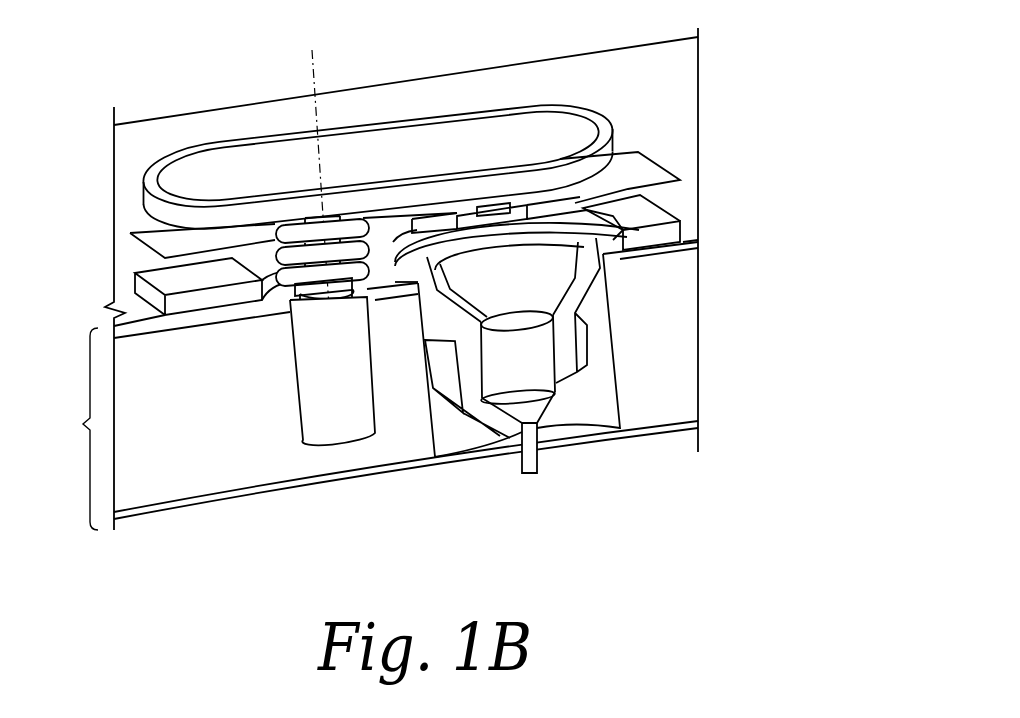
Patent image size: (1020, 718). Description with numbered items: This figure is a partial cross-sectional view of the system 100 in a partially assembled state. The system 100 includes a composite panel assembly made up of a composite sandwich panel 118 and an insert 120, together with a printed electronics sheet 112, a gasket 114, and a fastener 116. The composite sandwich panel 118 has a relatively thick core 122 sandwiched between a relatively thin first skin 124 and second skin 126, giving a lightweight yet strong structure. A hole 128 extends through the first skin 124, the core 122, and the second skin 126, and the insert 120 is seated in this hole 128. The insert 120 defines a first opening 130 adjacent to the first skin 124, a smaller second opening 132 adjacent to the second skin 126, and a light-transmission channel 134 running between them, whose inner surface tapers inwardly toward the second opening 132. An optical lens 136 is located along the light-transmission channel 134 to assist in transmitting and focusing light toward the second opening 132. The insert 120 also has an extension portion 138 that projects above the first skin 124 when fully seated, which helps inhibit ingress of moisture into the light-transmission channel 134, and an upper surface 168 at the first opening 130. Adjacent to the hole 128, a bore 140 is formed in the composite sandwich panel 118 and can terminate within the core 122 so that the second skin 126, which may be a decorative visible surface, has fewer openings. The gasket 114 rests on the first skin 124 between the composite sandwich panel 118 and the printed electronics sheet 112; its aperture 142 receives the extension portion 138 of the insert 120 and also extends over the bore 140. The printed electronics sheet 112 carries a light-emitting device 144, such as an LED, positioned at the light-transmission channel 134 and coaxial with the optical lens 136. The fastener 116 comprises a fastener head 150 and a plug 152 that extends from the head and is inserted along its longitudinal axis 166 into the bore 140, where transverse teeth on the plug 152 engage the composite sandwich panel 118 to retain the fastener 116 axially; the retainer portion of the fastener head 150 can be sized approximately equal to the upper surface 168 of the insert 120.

The system 100 is at (798, 22).
The printed electronics sheet 112 is at (163, 247).
The gasket 114 is at (683, 203).
The fastener 116 is at (513, 123).
The composite sandwich panel 118 is at (74, 429).
The insert 120 is at (593, 275).
The core 122 is at (687, 338).
The first skin 124 is at (705, 228).
The second skin 126 is at (700, 428).
The hole 128 is at (450, 444).
The first opening 130 is at (552, 258).
The second opening 132 is at (530, 485).
The light-transmission channel 134 is at (539, 355).
The optical lens 136 is at (538, 402).
The extension portion 138 is at (653, 213).
The bore 140 is at (317, 397).
The aperture 142 is at (273, 307).
The light-emitting device 144 is at (490, 210).
The fastener head 150 is at (143, 187).
The plug 152 is at (258, 237).
The longitudinal axis 166 is at (312, 67).
The upper surface 168 is at (613, 240).